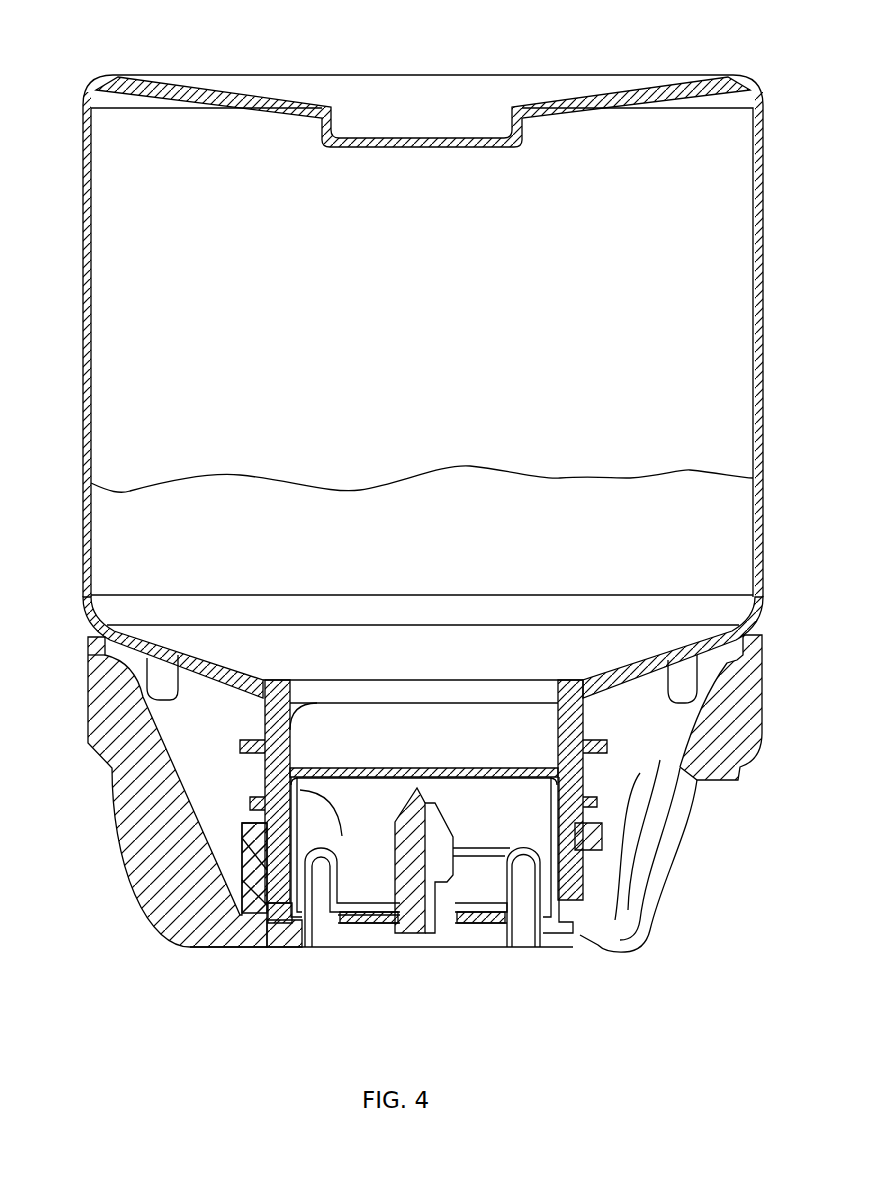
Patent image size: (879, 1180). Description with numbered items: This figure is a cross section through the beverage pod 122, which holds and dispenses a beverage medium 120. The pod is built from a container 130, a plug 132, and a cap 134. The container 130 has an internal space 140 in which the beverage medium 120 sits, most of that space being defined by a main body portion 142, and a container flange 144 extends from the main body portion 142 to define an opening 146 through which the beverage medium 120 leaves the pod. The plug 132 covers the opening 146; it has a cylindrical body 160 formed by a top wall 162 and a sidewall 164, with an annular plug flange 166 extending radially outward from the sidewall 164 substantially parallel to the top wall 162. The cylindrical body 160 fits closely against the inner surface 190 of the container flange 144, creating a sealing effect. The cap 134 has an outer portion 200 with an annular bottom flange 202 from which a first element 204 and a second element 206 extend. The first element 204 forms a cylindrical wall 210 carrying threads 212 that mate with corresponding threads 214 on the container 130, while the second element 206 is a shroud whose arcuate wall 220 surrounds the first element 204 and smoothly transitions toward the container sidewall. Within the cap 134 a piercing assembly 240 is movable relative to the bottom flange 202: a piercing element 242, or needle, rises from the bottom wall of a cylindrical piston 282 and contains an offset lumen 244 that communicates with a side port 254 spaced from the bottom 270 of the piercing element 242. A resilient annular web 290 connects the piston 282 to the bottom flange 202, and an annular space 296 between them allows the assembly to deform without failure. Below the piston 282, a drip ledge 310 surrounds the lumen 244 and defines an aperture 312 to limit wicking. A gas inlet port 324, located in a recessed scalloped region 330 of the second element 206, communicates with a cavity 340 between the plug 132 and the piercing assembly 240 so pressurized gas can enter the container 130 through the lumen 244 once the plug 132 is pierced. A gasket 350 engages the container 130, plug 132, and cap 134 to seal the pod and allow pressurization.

The beverage medium 120 is at (613, 477).
The beverage pod 122 is at (768, 74).
The container 130 is at (82, 340).
The plug 132 is at (532, 770).
The cap 134 is at (152, 907).
The internal space 140 is at (150, 142).
The main body portion 142 is at (766, 300).
The container flange 144 is at (569, 730).
The opening 146 is at (354, 710).
The cylindrical body 160 is at (425, 768).
The top wall 162 is at (548, 782).
The sidewall 164 is at (340, 775).
The plug flange 166 is at (268, 948).
The inner surface 190 is at (306, 710).
The outer portion 200 is at (760, 704).
The bottom flange 202 is at (237, 953).
The first element 204 is at (240, 857).
The second element 206 is at (122, 833).
The cylindrical wall 210 is at (588, 850).
The threads 212 is at (598, 858).
The threads 214 is at (250, 793).
The arcuate wall 220 is at (120, 878).
The piercing assembly 240 is at (585, 950).
The piercing element 242 is at (397, 790).
The lumen 244 is at (455, 800).
The side port 254 is at (457, 860).
The bottom 270 is at (402, 935).
The piston 282 is at (372, 925).
The web 290 is at (323, 900).
The annular space 296 is at (524, 915).
The drip ledge 310 is at (455, 930).
The aperture 312 is at (437, 928).
The gas inlet port 324 is at (586, 939).
The recessed scalloped region 330 is at (662, 850).
The cavity 340 is at (345, 834).
The gasket 350 is at (605, 890).